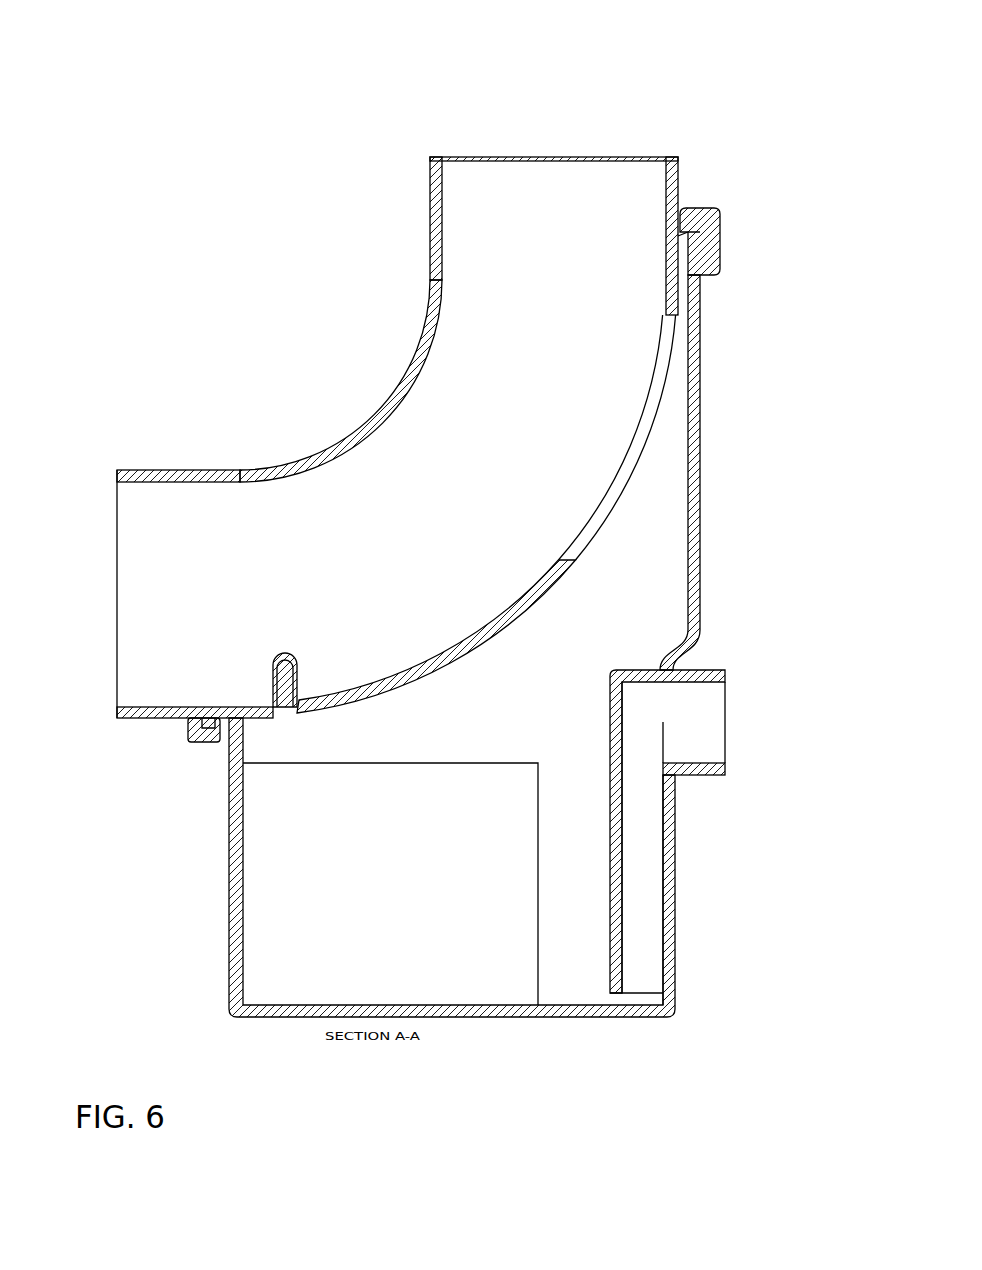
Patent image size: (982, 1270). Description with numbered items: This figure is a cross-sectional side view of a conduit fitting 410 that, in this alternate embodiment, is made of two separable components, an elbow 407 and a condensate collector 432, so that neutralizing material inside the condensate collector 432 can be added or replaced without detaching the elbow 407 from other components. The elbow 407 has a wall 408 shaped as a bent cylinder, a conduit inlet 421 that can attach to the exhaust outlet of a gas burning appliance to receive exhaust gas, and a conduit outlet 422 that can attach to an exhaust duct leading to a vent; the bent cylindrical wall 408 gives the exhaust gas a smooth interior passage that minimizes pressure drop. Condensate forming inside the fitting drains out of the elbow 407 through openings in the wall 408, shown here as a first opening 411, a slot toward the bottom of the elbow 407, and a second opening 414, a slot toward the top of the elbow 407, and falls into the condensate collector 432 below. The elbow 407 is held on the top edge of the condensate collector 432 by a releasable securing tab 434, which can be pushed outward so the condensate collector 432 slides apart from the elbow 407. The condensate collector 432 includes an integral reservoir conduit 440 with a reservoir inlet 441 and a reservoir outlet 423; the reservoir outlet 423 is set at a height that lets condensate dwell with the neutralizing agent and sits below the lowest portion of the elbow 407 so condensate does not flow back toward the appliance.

The conduit fitting 410 is at (165, 108).
The elbow 407 is at (300, 378).
The wall 408 is at (428, 225).
The conduit outlet 422 is at (555, 152).
The releasable securing tab 434 is at (712, 222).
The second opening 414 is at (668, 372).
The conduit inlet 421 is at (112, 507).
The first opening 411 is at (287, 655).
The condensate collector 432 is at (225, 889).
The reservoir outlet 423 is at (725, 705).
The reservoir conduit 440 is at (640, 917).
The reservoir inlet 441 is at (623, 1000).